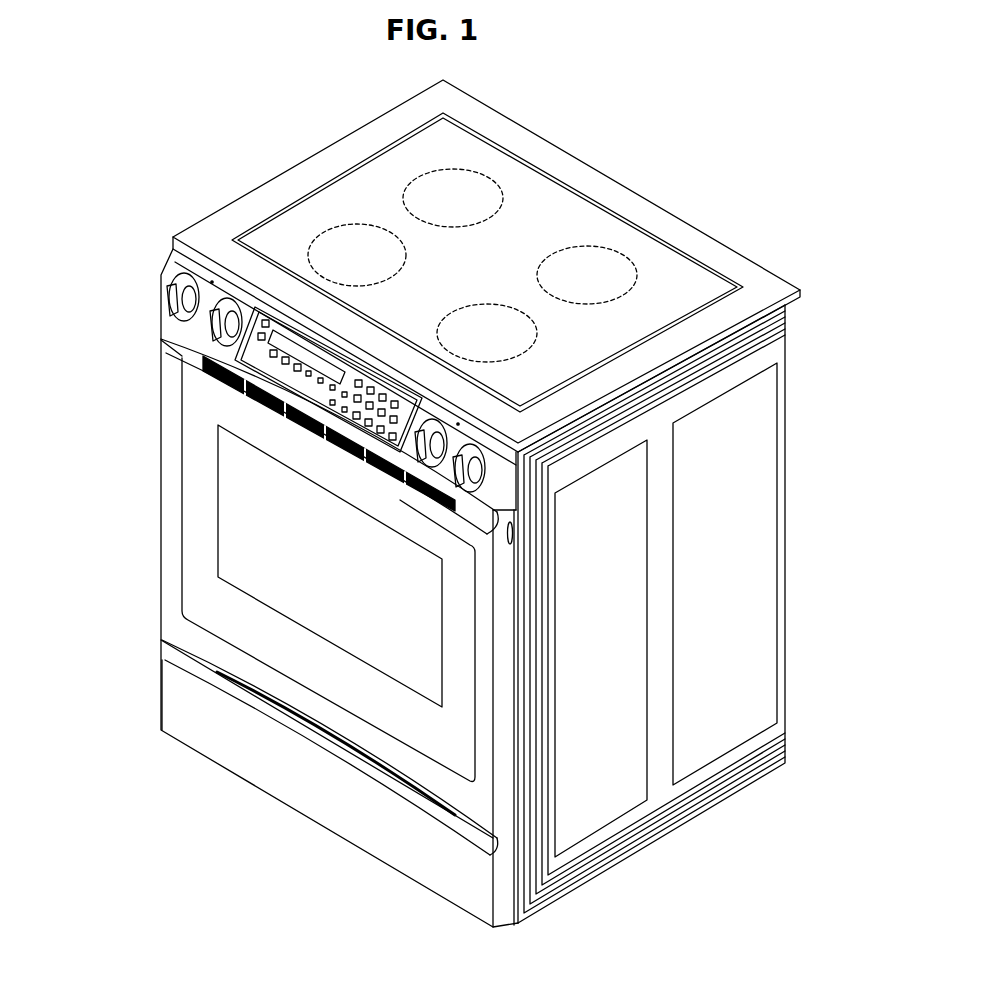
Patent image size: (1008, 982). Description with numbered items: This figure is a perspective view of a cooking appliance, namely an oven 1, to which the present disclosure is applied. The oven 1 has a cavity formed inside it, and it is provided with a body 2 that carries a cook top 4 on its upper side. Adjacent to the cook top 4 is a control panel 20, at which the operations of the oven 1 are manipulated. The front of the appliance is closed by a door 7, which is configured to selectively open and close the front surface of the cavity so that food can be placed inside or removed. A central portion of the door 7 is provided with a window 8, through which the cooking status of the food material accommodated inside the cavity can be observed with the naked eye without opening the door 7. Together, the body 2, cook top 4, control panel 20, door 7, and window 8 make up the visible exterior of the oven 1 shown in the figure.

The oven 1 is at (597, 165).
The body 2 is at (742, 534).
The cook top 4 is at (362, 177).
The door 7 is at (213, 453).
The window 8 is at (245, 518).
The control panel 20 is at (158, 256).